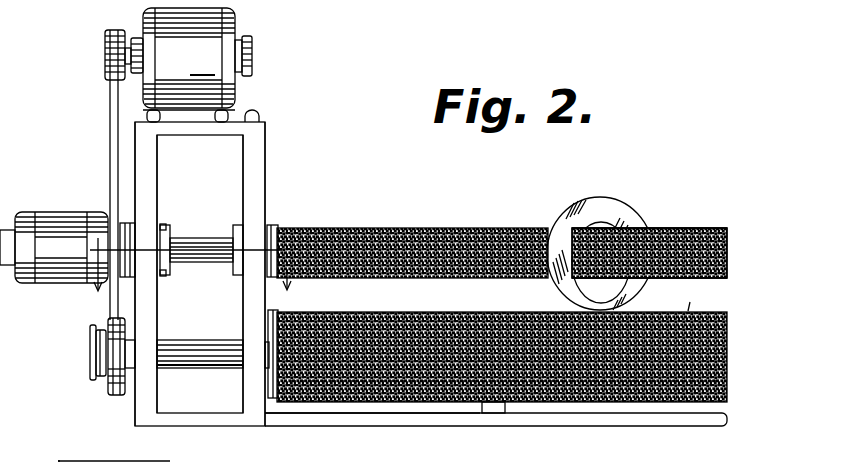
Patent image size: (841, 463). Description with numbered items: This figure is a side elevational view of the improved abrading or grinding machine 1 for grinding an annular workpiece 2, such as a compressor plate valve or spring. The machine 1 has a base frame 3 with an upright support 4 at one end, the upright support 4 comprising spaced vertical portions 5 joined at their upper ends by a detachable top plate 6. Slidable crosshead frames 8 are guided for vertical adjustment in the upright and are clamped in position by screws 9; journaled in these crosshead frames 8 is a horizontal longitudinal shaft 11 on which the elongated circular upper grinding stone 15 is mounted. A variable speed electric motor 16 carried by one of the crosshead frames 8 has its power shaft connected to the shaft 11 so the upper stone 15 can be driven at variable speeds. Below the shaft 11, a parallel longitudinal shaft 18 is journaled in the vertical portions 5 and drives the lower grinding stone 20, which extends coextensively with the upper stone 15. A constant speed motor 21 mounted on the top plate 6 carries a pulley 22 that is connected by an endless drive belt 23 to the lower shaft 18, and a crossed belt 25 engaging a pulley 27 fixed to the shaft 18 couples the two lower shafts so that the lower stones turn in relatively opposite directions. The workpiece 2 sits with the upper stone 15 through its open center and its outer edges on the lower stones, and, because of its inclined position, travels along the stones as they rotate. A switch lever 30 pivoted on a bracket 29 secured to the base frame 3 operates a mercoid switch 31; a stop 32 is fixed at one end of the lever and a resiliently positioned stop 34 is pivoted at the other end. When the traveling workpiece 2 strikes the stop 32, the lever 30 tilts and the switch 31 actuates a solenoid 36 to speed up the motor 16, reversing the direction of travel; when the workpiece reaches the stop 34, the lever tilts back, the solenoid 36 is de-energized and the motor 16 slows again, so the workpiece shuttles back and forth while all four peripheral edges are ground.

The abrading machine 1 is at (270, 177).
The workpiece 2 is at (604, 200).
The base frame 3 is at (508, 414).
The upright support 4 is at (266, 150).
The vertical portions 5 is at (240, 178).
The top plate 6 is at (262, 121).
The crosshead frames 8 is at (240, 223).
The screws 9 is at (168, 272).
The shaft 11 is at (218, 258).
The grinding stone 15 is at (452, 230).
The motor 16 is at (50, 282).
The shaft 18 is at (212, 360).
The grinding stone 20 is at (500, 312).
The motor 21 is at (238, 56).
The pulley 22 is at (106, 66).
The drive belt 23 is at (110, 112).
The crossed belt 25 is at (96, 358).
The pulley 27 is at (90, 342).
The bracket 29 is at (106, 386).
The switch lever 30 is at (590, 414).
The mercoid switch 31 is at (43, 452).
The stop 32 is at (341, 404).
The resiliently positioned stop 34 is at (700, 297).
The solenoid 36 is at (213, 461).